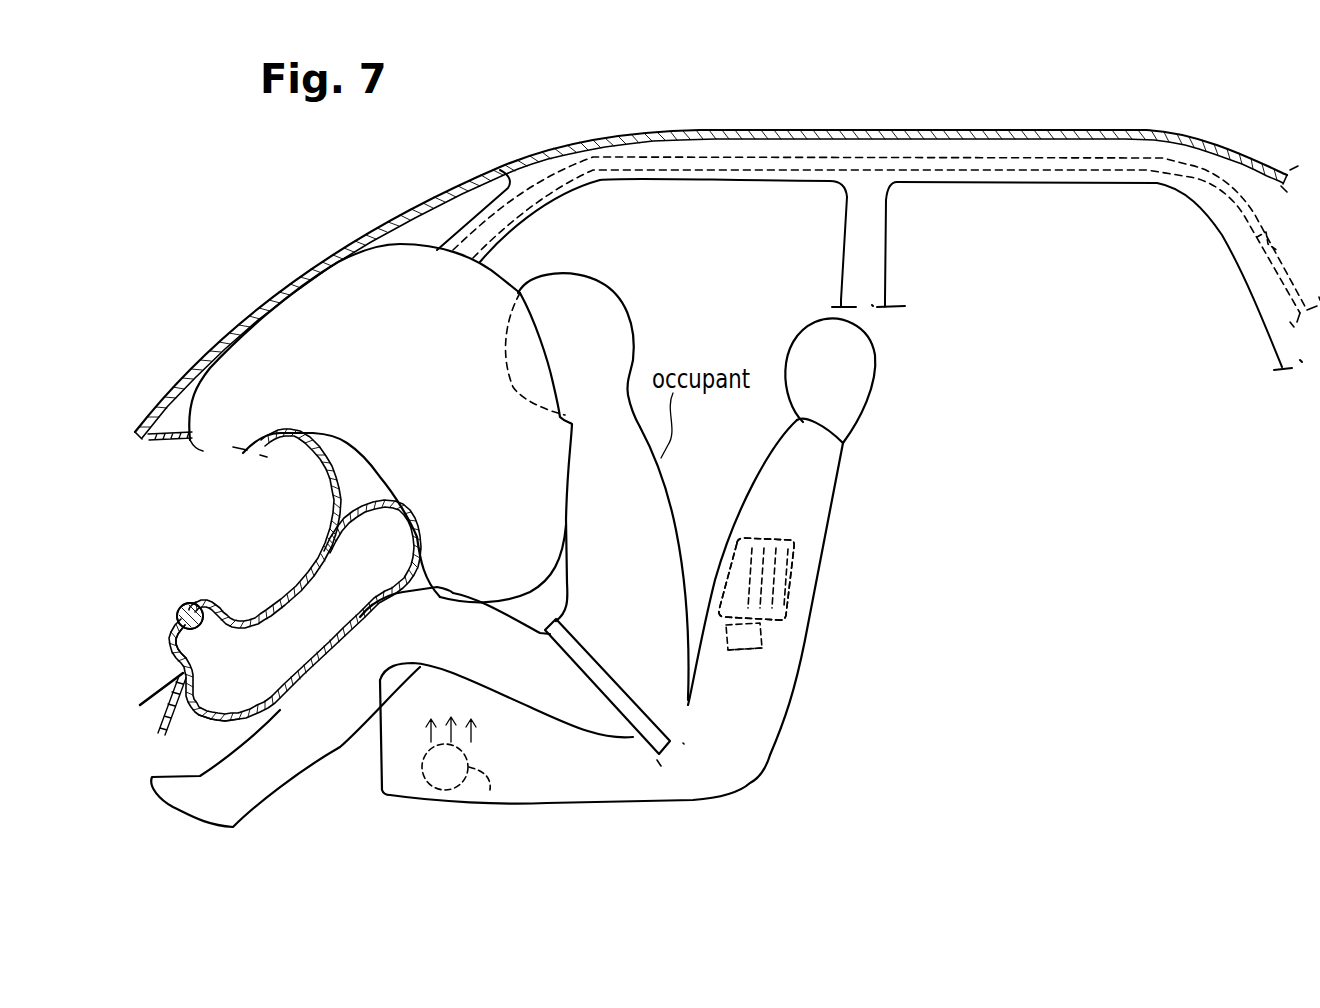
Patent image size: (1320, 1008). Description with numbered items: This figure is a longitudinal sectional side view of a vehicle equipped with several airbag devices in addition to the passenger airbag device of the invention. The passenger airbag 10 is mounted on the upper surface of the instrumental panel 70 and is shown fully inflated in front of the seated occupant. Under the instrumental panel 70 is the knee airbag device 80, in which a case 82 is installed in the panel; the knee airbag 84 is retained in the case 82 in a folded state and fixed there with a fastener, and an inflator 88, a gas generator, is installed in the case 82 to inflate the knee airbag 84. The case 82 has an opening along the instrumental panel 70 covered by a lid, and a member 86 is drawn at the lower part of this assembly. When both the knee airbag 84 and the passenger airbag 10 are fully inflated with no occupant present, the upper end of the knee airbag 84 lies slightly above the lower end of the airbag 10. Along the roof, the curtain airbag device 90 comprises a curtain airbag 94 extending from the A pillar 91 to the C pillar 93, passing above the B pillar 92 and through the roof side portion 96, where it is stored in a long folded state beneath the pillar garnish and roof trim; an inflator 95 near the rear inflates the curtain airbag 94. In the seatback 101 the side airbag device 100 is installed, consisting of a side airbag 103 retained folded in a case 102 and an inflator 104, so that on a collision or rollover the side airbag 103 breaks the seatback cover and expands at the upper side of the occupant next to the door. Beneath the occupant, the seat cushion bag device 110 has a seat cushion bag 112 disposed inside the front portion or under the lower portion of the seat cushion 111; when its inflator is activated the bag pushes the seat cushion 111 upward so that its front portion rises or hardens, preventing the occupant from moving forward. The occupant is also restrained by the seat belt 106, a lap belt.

The passenger airbag 10 is at (388, 245).
The instrumental panel 70 is at (332, 498).
The knee airbag device 80 is at (188, 586).
The case 82 is at (160, 645).
The knee airbag 84 is at (207, 722).
The support strut 86 is at (155, 716).
The inflator 88 is at (178, 610).
The curtain airbag device 90 is at (826, 150).
The A pillar 91 is at (521, 227).
The B pillar 92 is at (887, 303).
The C pillar 93 is at (1258, 307).
The curtain airbag 94 is at (938, 172).
The inflator 95 is at (1268, 275).
The roof side portion 96 is at (757, 183).
The side airbag device 100 is at (792, 585).
The seatback 101 is at (824, 510).
The case 102 is at (795, 551).
The side airbag 103 is at (765, 628).
The inflator 104 is at (757, 650).
The seat belt 106 is at (627, 686).
The seat cushion bag device 110 is at (408, 782).
The seat cushion 111 is at (600, 775).
The seat cushion bag 112 is at (490, 790).